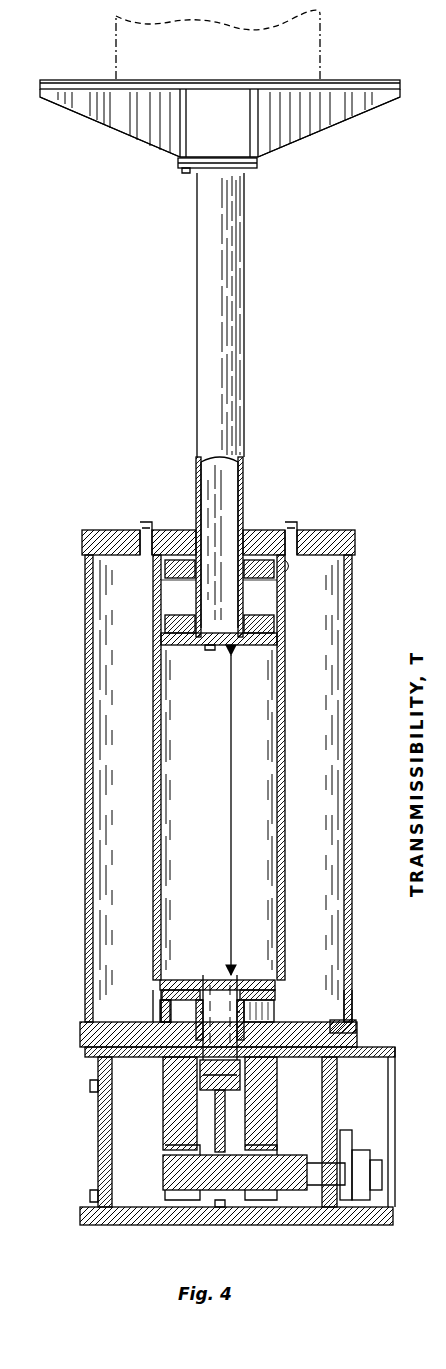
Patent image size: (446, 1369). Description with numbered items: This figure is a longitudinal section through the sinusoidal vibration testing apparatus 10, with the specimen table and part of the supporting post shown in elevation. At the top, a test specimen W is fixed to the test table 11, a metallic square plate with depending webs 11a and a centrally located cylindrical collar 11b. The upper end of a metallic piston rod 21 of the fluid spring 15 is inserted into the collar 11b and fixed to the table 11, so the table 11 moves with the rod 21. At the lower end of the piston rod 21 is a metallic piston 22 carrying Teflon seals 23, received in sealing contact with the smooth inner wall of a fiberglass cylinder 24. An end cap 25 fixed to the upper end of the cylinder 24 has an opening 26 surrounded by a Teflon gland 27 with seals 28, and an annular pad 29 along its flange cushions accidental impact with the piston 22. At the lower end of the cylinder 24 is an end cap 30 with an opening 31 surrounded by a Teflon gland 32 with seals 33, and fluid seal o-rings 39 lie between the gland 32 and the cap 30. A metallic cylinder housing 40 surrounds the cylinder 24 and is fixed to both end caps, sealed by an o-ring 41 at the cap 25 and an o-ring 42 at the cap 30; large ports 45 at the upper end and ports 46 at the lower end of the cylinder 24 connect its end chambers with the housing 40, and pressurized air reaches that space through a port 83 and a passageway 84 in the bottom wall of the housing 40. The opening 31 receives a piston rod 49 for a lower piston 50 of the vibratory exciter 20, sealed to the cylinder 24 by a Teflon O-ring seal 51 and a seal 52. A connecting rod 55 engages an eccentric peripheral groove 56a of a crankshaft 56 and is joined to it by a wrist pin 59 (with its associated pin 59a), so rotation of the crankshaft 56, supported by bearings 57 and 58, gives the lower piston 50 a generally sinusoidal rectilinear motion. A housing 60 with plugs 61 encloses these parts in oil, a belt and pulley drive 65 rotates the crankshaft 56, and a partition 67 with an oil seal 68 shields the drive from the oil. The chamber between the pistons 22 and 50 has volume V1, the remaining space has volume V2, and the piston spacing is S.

The test specimen W is at (130, 45).
The sinusoidal vibration testing apparatus 10 is at (194, 314).
The test table 11 is at (325, 112).
The depending webs 11a is at (80, 104).
The cylindrical collar 11b is at (248, 136).
The fluid spring 15 is at (84, 686).
The vibratory exciter 20 is at (330, 1218).
The piston rod 21 is at (205, 230).
The piston 22 is at (178, 650).
The Teflon o-rings or seals 23 is at (276, 620).
The fiberglass cylinder 24 is at (153, 760).
The end cap 25 is at (282, 528).
The opening 26 is at (240, 540).
The Teflon gland 27 is at (190, 528).
The Teflon o-rings or seals 28 is at (146, 520).
The annular pad 29 is at (160, 588).
The end cap 30 is at (296, 1036).
The opening 31 is at (246, 1030).
The Teflon gland 32 is at (158, 1018).
The Teflon o-rings or seals 33 is at (220, 1017).
The fluid seal o-rings 39 is at (270, 1070).
The cylinder housing 40 is at (86, 846).
The o-ring 41 is at (298, 525).
The o-ring 42 is at (278, 1055).
The ports 45 is at (287, 568).
The ports 46 is at (283, 1010).
The piston rod 49 is at (216, 975).
The lower piston 50 is at (180, 985).
The Teflon O-ring seal 51 is at (258, 985).
The seal 52 is at (156, 1000).
The connecting rod 55 is at (214, 1120).
The crankshaft 56 is at (284, 1160).
The eccentric peripheral groove 56a is at (235, 1172).
The bearing 57 is at (164, 1182).
The bearing 58 is at (278, 1120).
The wrist pin 59 is at (200, 1080).
The pivot pin 59a is at (218, 1205).
The housing 60 is at (396, 1140).
The plugs 61 is at (90, 1086).
The belt and pulley drive 65 is at (372, 1192).
The partition 67 is at (338, 1076).
The oil seal 68 is at (340, 1122).
The port 83 is at (355, 1000).
The passageway 84 is at (358, 1027).
The distance between pistons S is at (231, 815).
The chamber volume V1 is at (186, 812).
The remaining space volume V2 is at (220, 700).